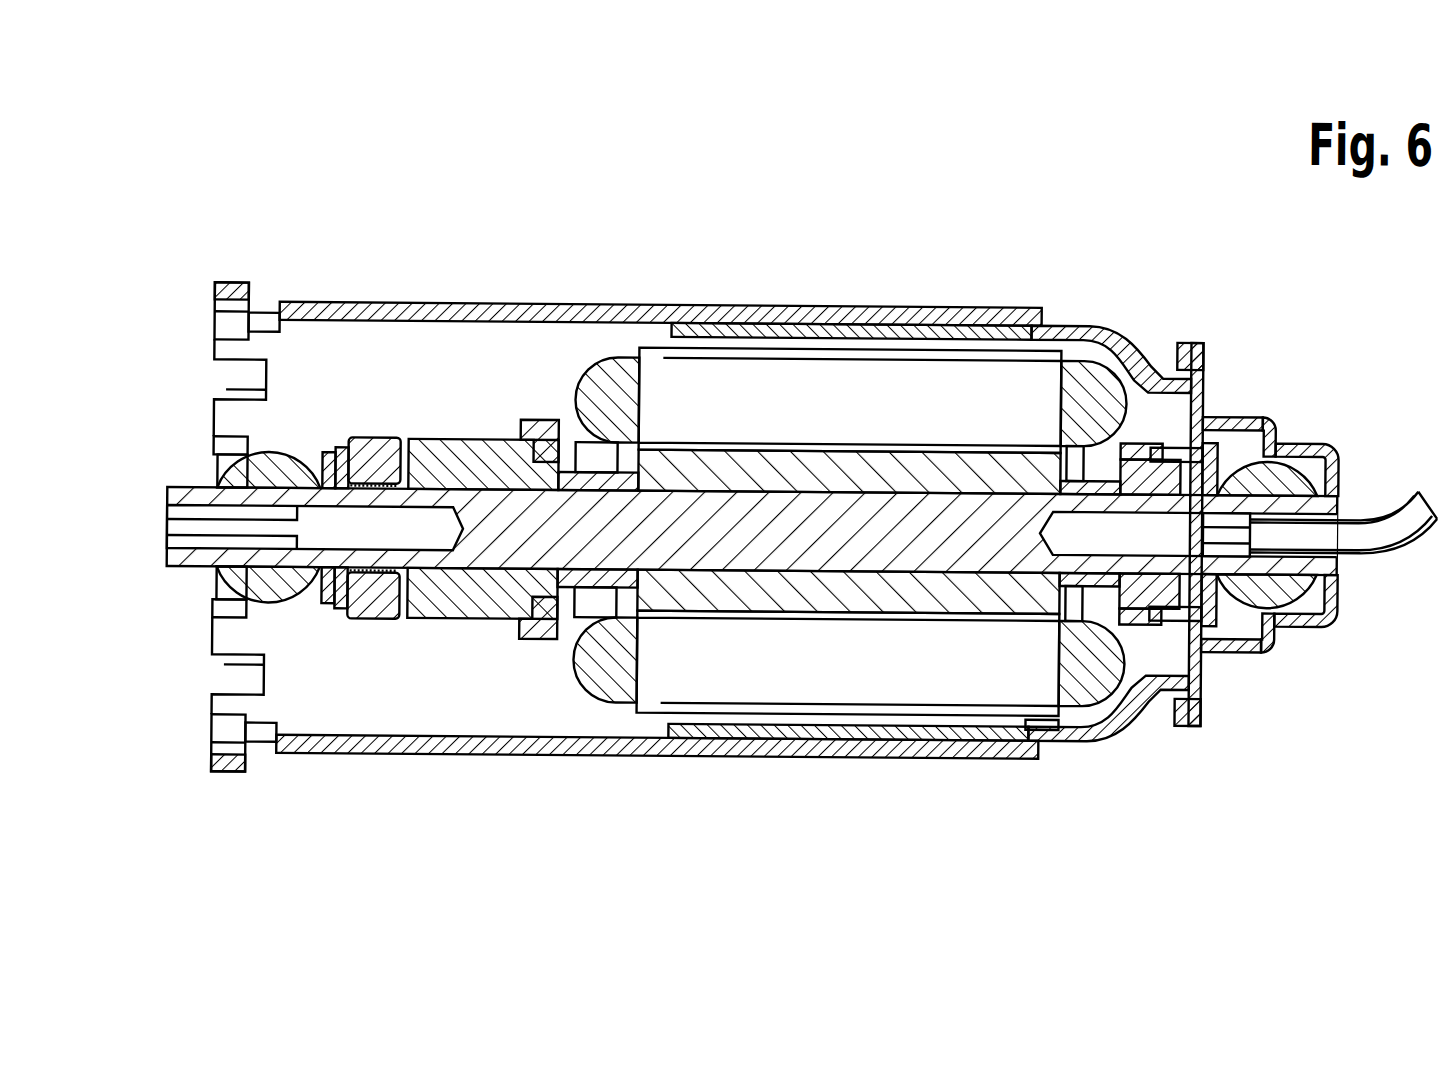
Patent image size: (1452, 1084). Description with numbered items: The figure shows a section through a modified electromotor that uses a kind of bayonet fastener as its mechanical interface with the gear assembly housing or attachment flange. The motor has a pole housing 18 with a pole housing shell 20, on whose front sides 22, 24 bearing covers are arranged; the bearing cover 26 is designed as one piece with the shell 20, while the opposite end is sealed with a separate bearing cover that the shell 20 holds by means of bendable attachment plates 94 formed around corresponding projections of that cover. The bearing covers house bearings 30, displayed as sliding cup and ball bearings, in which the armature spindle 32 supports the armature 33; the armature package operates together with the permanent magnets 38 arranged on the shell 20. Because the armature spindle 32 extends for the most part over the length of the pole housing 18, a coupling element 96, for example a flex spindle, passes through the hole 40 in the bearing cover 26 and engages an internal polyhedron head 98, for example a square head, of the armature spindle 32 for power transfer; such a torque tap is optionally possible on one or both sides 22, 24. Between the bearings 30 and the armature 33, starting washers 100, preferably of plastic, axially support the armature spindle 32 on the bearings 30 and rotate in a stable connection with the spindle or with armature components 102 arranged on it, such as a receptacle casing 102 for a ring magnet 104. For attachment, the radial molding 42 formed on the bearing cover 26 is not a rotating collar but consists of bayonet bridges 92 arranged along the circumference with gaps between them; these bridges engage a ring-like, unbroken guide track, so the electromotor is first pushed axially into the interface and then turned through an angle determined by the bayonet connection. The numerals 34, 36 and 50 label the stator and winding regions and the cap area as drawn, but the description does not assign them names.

The pole housing 18 is at (1028, 762).
The pole housing shell 20 is at (862, 755).
The front side 22 is at (1128, 326).
The front side 24 is at (213, 320).
The bearing cover 26 is at (1236, 394).
The bearing 30 is at (232, 470).
The armature spindle 32 is at (540, 552).
The armature 33 is at (596, 356).
The stator 34 is at (753, 391).
The winding head 36 is at (1080, 372).
The permanent magnets 38 is at (905, 330).
The hole 40 is at (1334, 579).
The radial molding 42 is at (1188, 718).
The sealing ring 50 is at (1269, 409).
The bayonet bridges 92 is at (1190, 338).
The bendable attachment plates 94 is at (227, 282).
The coupling element 96 is at (1380, 515).
The internal polyhedron head 98 is at (207, 541).
The starting washers 100 is at (330, 602).
The receptacle casing 102 is at (343, 445).
The ring magnet 104 is at (383, 612).